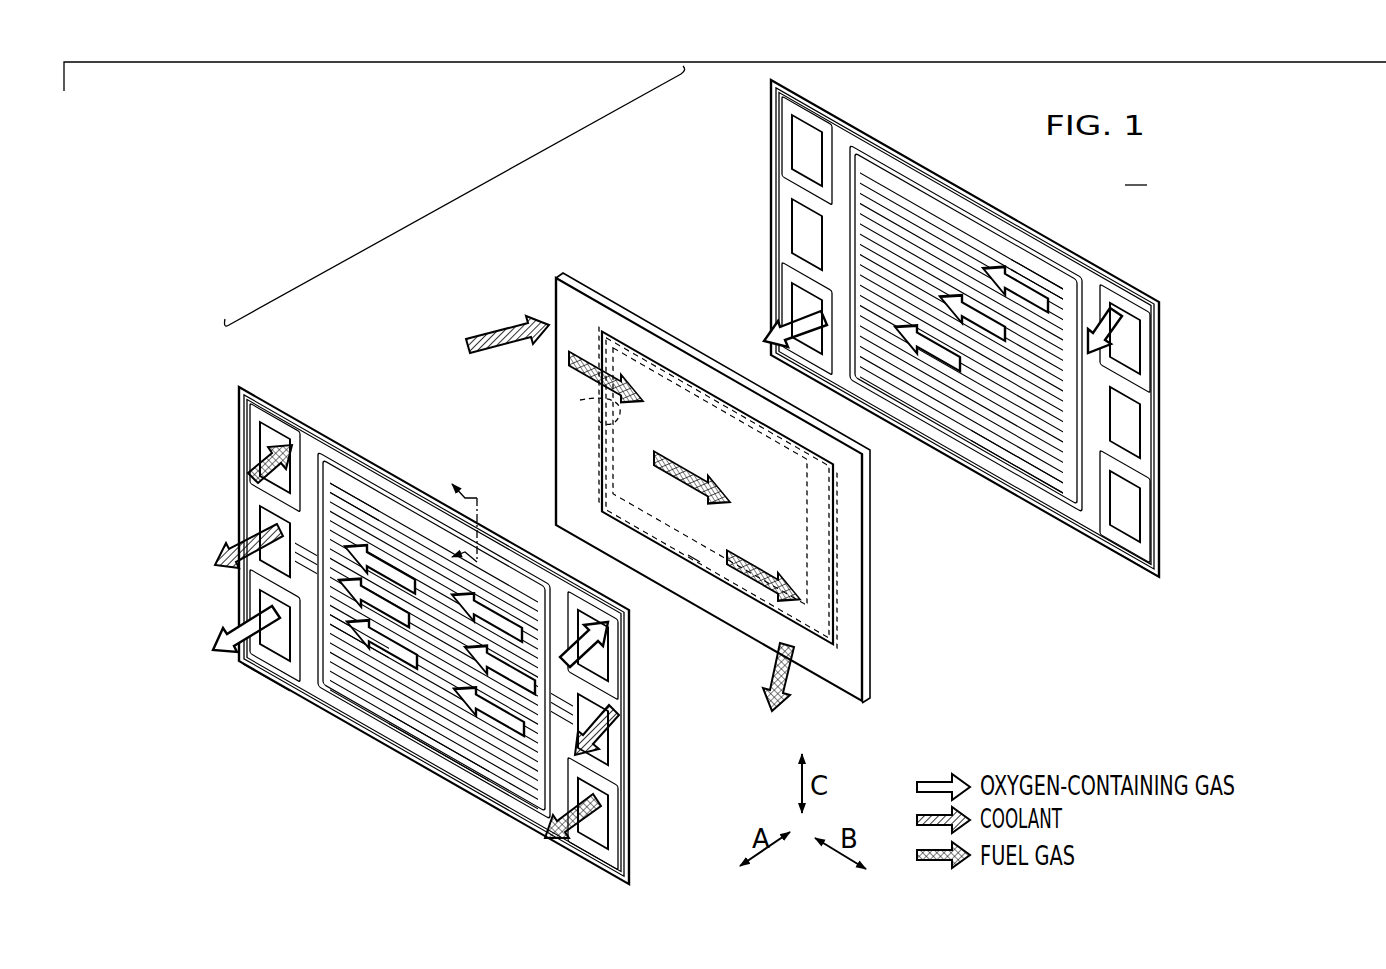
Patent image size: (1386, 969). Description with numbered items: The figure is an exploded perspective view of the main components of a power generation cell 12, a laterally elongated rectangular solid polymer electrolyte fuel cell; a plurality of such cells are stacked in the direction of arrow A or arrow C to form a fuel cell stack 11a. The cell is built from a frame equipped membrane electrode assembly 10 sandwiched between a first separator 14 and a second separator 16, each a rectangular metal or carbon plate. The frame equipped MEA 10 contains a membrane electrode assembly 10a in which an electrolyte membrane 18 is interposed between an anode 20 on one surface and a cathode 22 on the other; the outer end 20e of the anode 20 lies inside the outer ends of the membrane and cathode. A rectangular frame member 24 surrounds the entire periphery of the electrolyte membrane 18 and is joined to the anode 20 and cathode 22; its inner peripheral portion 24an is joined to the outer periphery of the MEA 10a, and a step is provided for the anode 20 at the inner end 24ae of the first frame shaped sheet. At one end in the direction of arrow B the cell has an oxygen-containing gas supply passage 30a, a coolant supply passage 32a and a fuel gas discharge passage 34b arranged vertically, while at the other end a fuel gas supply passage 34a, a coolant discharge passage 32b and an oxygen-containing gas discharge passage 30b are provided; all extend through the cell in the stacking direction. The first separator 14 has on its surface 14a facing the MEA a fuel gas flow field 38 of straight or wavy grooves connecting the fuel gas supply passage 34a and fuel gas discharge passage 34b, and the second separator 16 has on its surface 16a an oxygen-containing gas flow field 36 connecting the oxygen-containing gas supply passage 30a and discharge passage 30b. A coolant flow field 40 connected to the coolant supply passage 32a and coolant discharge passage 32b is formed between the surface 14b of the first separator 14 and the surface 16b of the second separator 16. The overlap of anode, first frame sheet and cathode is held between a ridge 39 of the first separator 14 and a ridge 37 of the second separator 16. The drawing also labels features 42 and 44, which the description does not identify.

The frame equipped membrane electrode assembly 10 is at (698, 448).
The membrane electrode assembly 10a is at (694, 562).
The fuel cell stack 11a is at (1143, 171).
The power generation cell 12 is at (462, 190).
The first separator 14 is at (252, 384).
The surface of the first separator 14a is at (252, 684).
The surface of the first separator 14b is at (278, 690).
The second separator 16 is at (768, 97).
The surface of the second separator 16a is at (1120, 545).
The surface of the second separator 16b is at (1137, 553).
The electrolyte membrane 18 is at (782, 548).
The anode 20 is at (595, 479).
The outer end of the anode 20e is at (582, 452).
The cathode 22 is at (833, 582).
The frame member 24 is at (611, 304).
The inner end of the first frame shaped sheet 24ae is at (580, 400).
The inner peripheral portion of the first frame shaped sheet 24an is at (676, 392).
The oxygen-containing gas supply passage 30a is at (602, 666).
The oxygen-containing gas discharge passage 30b is at (270, 610).
The coolant supply passage 32a is at (600, 712).
The coolant discharge passage 32b is at (270, 525).
The fuel gas supply passage 34a is at (273, 445).
The fuel gas discharge passage 34b is at (600, 805).
The oxygen-containing gas flow field 36 is at (925, 232).
The ridge of the second separator 37 is at (990, 425).
The fuel gas flow field 38 is at (386, 507).
The ridge of the first separator 39 is at (447, 738).
The coolant flow field 40 is at (368, 690).
The inlet buffer 42 is at (343, 468).
The buffer 44 is at (1012, 242).